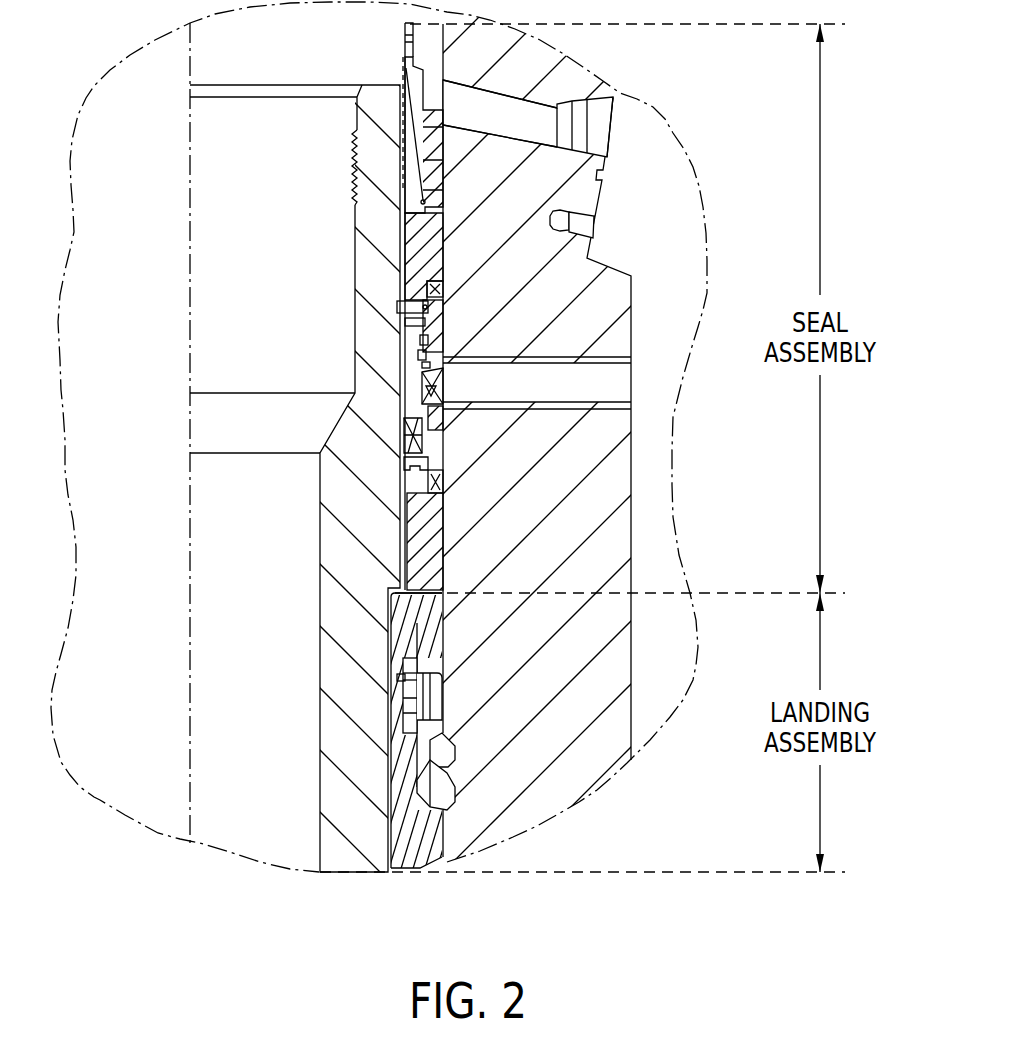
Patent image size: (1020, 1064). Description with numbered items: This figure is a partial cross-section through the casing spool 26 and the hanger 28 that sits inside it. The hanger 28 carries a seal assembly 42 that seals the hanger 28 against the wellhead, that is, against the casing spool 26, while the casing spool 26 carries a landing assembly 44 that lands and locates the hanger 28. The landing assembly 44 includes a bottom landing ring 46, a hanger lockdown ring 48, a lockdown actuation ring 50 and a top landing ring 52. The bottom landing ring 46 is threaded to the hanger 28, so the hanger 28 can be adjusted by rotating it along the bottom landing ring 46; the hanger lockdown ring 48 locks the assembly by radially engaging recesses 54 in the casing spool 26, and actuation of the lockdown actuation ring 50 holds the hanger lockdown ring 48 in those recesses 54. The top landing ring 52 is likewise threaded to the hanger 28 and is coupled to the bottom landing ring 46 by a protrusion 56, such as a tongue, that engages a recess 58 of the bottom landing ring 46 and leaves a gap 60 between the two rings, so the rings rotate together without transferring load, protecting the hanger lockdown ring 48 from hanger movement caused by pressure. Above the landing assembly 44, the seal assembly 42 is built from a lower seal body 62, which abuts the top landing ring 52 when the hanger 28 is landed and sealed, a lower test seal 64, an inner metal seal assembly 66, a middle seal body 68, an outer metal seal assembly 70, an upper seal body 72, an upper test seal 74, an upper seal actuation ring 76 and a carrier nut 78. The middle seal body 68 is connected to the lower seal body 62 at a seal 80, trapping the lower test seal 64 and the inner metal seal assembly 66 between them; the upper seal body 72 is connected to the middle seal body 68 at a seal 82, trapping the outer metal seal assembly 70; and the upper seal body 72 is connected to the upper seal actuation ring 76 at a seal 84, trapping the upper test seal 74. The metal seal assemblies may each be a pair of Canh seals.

The casing spool 26 is at (610, 479).
The hanger 28 is at (386, 97).
The seal assembly 42 is at (415, 306).
The landing assembly 44 is at (406, 757).
The bottom landing ring 46 is at (415, 850).
The hanger lockdown ring 48 is at (441, 790).
The lockdown actuation ring 50 is at (440, 726).
The top landing ring 52 is at (403, 623).
The recesses 54 is at (456, 757).
The protrusion 56 is at (398, 678).
The recess 58 is at (411, 713).
The gap 60 is at (417, 700).
The lower seal body 62 is at (427, 538).
The lower test seal 64 is at (440, 483).
The inner metal seal assembly 66 is at (410, 436).
The middle seal body 68 is at (433, 428).
The outer metal seal assembly 70 is at (438, 387).
The upper seal body 72 is at (436, 332).
The upper test seal 74 is at (445, 291).
The upper seal actuation ring 76 is at (427, 247).
The carrier nut 78 is at (423, 78).
The seal 80 is at (428, 466).
The seal 82 is at (424, 348).
The seal 84 is at (410, 304).